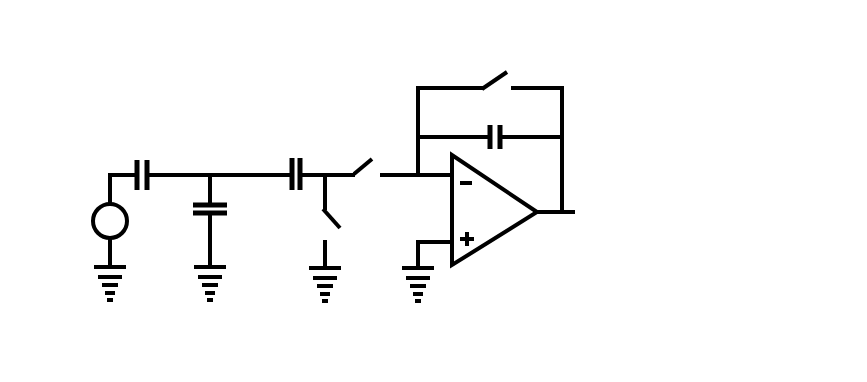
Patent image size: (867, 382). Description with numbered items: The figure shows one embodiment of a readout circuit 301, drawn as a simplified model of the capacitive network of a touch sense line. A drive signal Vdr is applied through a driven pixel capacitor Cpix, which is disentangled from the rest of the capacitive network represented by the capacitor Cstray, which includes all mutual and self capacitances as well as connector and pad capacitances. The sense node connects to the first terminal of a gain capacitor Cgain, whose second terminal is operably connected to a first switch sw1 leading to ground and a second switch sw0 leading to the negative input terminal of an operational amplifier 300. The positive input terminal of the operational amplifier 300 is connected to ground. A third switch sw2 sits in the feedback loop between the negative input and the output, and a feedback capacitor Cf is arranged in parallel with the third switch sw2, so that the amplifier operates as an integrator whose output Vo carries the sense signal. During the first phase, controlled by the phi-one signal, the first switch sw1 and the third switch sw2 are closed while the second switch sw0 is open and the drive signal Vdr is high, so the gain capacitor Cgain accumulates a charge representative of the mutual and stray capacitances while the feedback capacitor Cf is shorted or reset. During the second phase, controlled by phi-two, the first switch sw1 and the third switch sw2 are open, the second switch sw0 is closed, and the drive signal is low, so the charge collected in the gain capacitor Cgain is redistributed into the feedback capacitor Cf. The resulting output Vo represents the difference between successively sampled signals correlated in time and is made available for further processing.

The operational amplifier 300 is at (497, 236).
The readout circuit 301 is at (350, 192).
The drive signal Vdr is at (86, 237).
The pixel capacitor Cpix is at (200, 158).
The stray capacitor Cstray is at (237, 226).
The gain capacitor Cgain is at (314, 157).
The second switch sw0 is at (397, 159).
The first switch sw1 is at (341, 237).
The third switch sw2 is at (491, 123).
The feedback capacitor Cf is at (490, 125).
The integrator output Vo is at (569, 199).